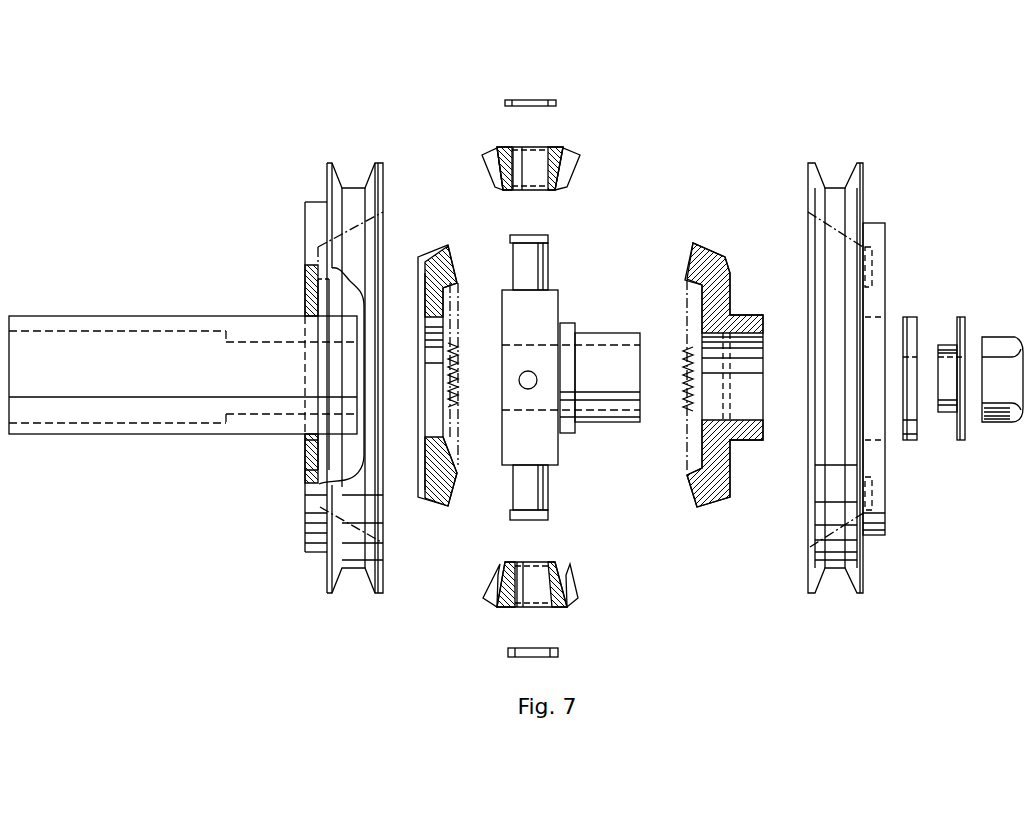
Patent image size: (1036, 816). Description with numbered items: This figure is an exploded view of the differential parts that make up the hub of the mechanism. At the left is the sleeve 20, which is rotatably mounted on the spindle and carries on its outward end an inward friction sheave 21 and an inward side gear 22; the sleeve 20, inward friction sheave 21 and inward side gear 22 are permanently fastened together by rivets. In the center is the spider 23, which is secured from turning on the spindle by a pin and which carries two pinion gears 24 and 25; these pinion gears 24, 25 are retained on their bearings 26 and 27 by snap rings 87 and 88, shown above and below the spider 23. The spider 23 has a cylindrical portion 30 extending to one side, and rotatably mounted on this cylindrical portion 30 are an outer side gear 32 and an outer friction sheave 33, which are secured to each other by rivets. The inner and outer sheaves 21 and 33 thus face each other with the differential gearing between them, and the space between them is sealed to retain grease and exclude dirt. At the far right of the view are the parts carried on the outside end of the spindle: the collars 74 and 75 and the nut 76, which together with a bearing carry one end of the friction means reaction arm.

The sleeve 20 is at (174, 314).
The inward friction sheave 21 is at (305, 217).
The inward side gear 22 is at (433, 505).
The spider 23 is at (560, 305).
The pinion gear 24 is at (570, 598).
The pinion gear 25 is at (570, 153).
The bearing 26 is at (550, 487).
The bearing 27 is at (550, 258).
The cylindrical portion 30 is at (610, 423).
The outer side gear 32 is at (710, 505).
The outer friction sheave 33 is at (873, 222).
The collar 74 is at (908, 442).
The collar 75 is at (962, 317).
The nut 76 is at (1005, 422).
The snap ring 87 is at (507, 649).
The snap ring 88 is at (525, 100).